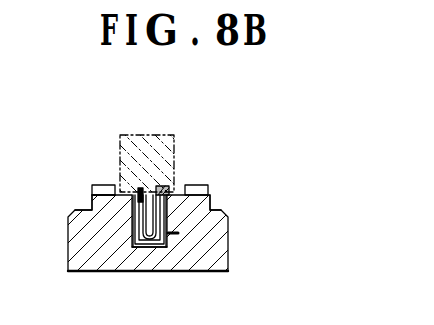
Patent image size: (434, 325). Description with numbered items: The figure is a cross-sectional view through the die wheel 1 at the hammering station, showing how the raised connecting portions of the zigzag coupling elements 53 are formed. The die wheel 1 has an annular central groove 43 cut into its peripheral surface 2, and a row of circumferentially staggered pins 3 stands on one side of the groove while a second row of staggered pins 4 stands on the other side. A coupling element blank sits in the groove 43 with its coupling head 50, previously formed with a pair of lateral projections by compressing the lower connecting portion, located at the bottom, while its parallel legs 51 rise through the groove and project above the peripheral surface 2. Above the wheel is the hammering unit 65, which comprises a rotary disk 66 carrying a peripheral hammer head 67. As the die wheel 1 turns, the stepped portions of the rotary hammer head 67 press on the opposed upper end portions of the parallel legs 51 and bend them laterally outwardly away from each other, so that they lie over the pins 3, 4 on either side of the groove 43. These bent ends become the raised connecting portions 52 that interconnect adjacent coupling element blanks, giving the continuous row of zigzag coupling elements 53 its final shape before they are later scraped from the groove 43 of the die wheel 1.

The die wheel 1 is at (68, 230).
The peripheral surface 2 is at (117, 187).
The pins 3 is at (97, 186).
The pins 4 is at (207, 186).
The annular central groove 43 is at (137, 250).
The coupling head 50 is at (161, 249).
The parallel legs 51 is at (170, 233).
The raised connecting portions 52 is at (124, 200).
The zigzag coupling elements 53 is at (182, 258).
The hammering unit 65 is at (141, 134).
The rotary disk 66 is at (173, 192).
The hammer head 67 is at (185, 258).